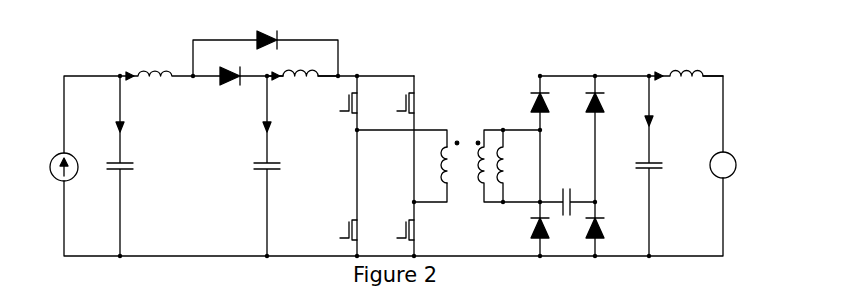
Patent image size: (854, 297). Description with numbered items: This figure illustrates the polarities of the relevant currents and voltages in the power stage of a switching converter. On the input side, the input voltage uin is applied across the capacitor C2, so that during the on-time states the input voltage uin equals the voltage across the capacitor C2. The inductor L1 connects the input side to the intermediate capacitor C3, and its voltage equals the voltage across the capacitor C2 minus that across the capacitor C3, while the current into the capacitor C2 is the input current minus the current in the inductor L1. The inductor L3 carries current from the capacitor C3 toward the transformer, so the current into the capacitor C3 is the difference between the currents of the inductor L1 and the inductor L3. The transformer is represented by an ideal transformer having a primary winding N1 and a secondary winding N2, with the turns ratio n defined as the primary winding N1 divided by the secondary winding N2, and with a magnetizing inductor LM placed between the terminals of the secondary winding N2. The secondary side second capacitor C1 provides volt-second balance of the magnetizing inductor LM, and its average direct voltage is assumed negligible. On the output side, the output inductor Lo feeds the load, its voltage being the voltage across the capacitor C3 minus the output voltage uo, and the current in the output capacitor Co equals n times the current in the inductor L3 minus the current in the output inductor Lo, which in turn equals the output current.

The input voltage uin is at (64, 169).
The capacitor C2 is at (130, 166).
The inductor L1 is at (156, 79).
The capacitor C3 is at (277, 166).
The inductor L3 is at (302, 79).
The primary winding N1 is at (448, 147).
The secondary winding N2 is at (508, 156).
The magnetizing inductor LM is at (510, 166).
The secondary side second capacitor C1 is at (567, 194).
The output capacitor Co is at (660, 166).
The output inductor Lo is at (686, 79).
The output voltage uo is at (732, 165).